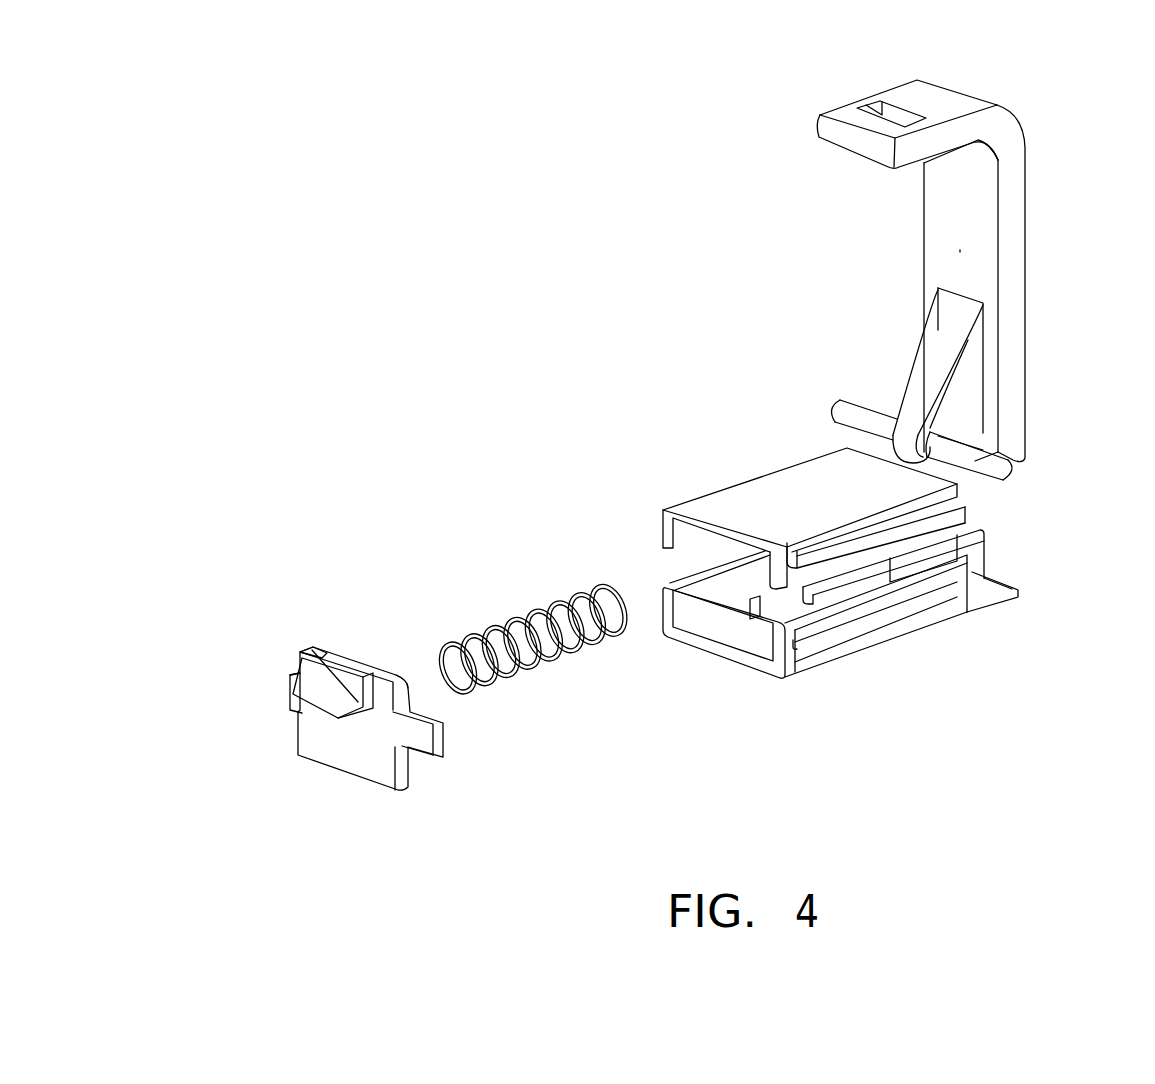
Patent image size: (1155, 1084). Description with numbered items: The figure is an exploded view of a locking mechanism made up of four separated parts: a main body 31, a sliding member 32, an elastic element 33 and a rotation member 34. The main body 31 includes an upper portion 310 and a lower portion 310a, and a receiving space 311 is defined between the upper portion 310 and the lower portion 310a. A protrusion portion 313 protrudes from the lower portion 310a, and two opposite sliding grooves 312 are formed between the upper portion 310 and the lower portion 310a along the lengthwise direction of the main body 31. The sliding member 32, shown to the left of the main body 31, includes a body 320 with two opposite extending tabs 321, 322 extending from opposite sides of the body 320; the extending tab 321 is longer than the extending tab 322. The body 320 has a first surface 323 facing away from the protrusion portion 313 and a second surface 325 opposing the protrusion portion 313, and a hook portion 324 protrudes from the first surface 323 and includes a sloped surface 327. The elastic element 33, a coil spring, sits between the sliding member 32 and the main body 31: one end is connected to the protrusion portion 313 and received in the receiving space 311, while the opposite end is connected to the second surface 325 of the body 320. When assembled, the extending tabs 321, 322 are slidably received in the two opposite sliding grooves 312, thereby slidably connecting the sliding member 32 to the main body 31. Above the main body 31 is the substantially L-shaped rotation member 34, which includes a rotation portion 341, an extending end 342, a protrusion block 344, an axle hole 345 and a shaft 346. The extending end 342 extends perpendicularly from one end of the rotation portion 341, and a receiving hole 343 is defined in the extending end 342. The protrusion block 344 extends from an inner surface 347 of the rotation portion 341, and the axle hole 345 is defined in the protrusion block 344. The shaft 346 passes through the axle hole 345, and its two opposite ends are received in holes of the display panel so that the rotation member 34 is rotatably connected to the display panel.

The main body 31 is at (842, 554).
The upper portion 310 is at (737, 502).
The lower portion 310a is at (990, 592).
The receiving space 311 is at (690, 597).
The sliding grooves 312 is at (837, 603).
The protrusion portion 313 is at (975, 550).
The sliding member 32 is at (368, 703).
The body 320 is at (375, 767).
The extending tab 321 is at (418, 740).
The extending tab 322 is at (290, 687).
The first surface 323 is at (358, 700).
The hook portion 324 is at (317, 694).
The second surface 325 is at (395, 673).
The sloped surface 327 is at (332, 682).
The elastic element 33 is at (510, 622).
The rotation member 34 is at (935, 280).
The rotation portion 341 is at (1037, 283).
The extending end 342 is at (862, 145).
The receiving hole 343 is at (870, 112).
The protrusion block 344 is at (940, 352).
The axle hole 345 is at (979, 417).
The shaft 346 is at (1010, 470).
The inner surface 347 is at (972, 193).